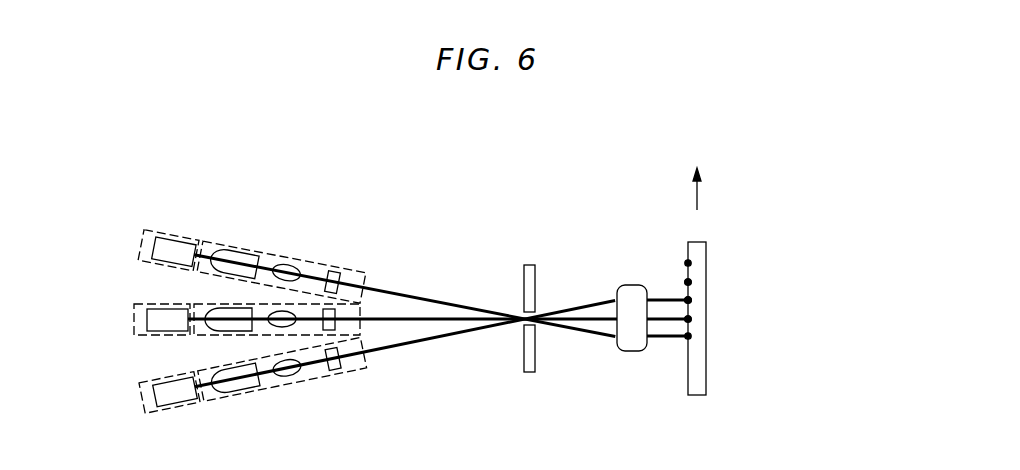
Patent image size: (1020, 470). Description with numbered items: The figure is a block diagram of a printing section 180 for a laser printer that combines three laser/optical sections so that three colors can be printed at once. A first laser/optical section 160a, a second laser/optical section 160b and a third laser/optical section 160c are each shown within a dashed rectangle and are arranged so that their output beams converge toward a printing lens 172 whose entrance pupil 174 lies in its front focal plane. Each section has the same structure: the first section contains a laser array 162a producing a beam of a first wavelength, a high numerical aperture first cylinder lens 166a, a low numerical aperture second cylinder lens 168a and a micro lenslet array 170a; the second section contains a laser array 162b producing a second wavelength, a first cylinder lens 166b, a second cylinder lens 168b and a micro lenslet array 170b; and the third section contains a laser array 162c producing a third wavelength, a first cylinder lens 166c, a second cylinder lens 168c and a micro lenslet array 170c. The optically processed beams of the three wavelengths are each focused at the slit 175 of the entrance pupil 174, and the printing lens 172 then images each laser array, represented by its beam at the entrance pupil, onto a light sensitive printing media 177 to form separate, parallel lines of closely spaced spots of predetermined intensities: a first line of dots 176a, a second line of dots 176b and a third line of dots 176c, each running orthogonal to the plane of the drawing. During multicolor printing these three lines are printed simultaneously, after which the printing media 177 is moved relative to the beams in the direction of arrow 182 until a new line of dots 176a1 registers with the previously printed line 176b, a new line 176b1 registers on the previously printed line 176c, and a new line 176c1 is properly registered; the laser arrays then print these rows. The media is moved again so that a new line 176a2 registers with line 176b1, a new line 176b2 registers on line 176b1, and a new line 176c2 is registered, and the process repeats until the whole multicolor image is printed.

The printing section 180 is at (358, 158).
The first laser/optical section 160a is at (142, 243).
The second laser/optical section 160b is at (134, 319).
The third laser/optical section 160c is at (142, 396).
The laser array 162a is at (167, 238).
The laser array 162b is at (148, 306).
The laser array 162c is at (160, 383).
The first cylinder lens 166a is at (242, 253).
The first cylinder lens 166b is at (208, 331).
The first cylinder lens 166c is at (234, 390).
The second cylinder lens 168a is at (290, 265).
The second cylinder lens 168b is at (274, 328).
The second cylinder lens 168c is at (290, 378).
The micro lenslet array 170a is at (333, 270).
The micro lenslet array 170b is at (338, 331).
The micro lenslet array 170c is at (338, 372).
The entrance pupil 174 is at (528, 265).
The slit 175 is at (523, 315).
The printing lens 172 is at (632, 285).
The light sensitive printing media 177 is at (700, 242).
The arrow 182 is at (697, 195).
The line of dots 176c2 is at (690, 263).
The line of dots 176c1 is at (690, 282).
The line of dots 176b2 is at (781, 285).
The line of dots 176c is at (690, 300).
The line of dots 176b1 is at (755, 311).
The line of dots 176a2 is at (779, 311).
The line of dots 176b is at (690, 319).
The line of dots 176a1 is at (752, 334).
The line of dots 176a is at (690, 336).